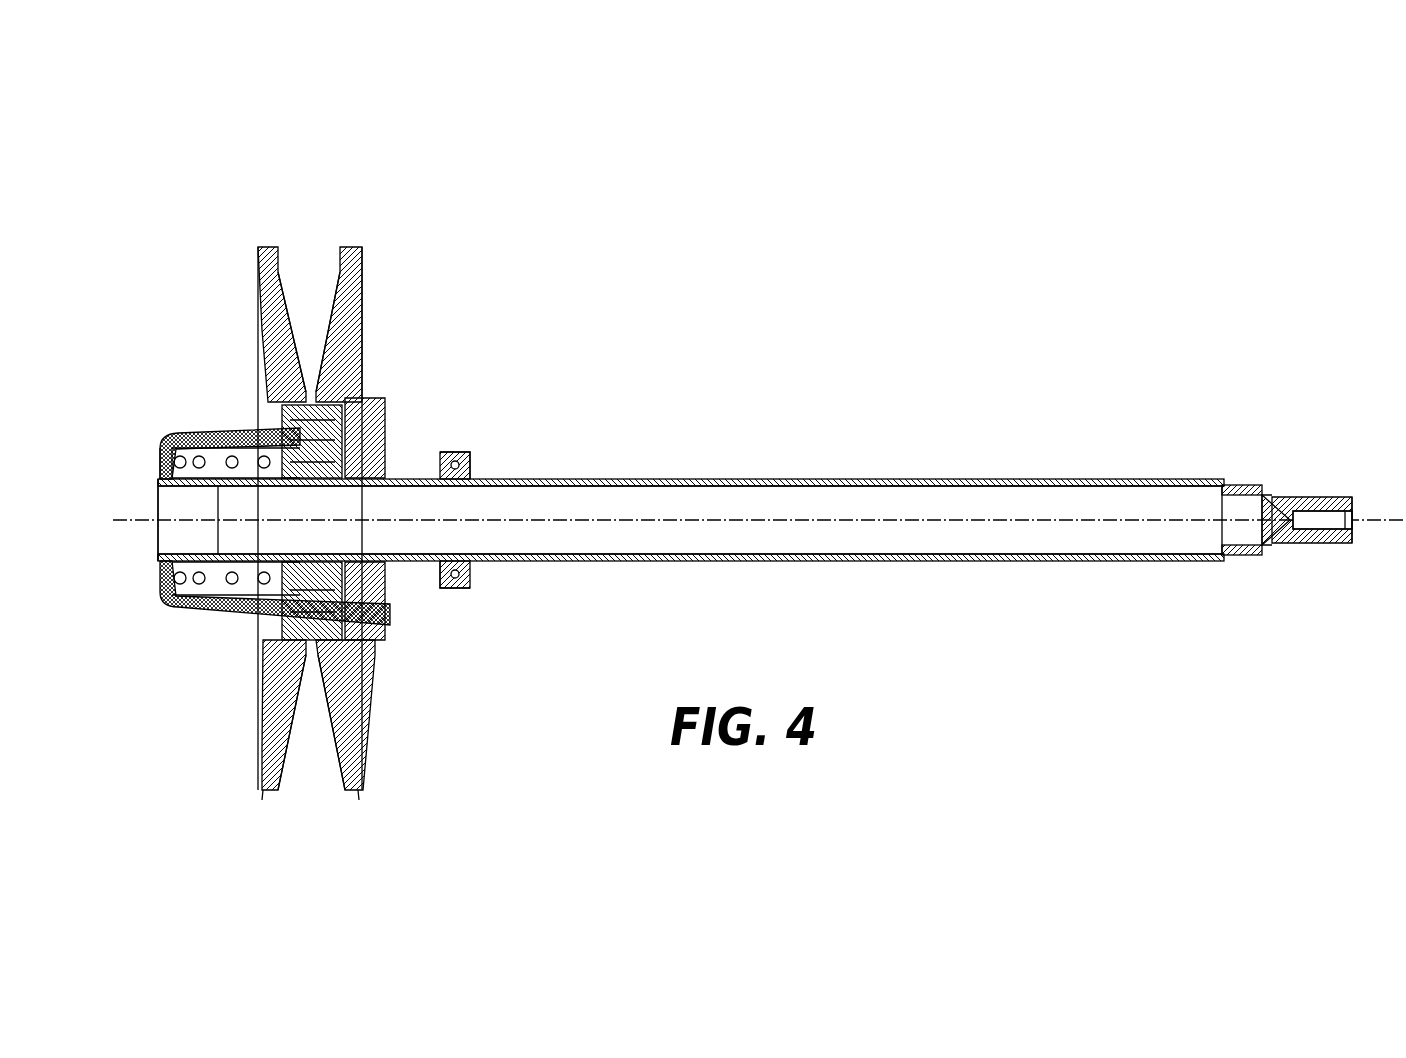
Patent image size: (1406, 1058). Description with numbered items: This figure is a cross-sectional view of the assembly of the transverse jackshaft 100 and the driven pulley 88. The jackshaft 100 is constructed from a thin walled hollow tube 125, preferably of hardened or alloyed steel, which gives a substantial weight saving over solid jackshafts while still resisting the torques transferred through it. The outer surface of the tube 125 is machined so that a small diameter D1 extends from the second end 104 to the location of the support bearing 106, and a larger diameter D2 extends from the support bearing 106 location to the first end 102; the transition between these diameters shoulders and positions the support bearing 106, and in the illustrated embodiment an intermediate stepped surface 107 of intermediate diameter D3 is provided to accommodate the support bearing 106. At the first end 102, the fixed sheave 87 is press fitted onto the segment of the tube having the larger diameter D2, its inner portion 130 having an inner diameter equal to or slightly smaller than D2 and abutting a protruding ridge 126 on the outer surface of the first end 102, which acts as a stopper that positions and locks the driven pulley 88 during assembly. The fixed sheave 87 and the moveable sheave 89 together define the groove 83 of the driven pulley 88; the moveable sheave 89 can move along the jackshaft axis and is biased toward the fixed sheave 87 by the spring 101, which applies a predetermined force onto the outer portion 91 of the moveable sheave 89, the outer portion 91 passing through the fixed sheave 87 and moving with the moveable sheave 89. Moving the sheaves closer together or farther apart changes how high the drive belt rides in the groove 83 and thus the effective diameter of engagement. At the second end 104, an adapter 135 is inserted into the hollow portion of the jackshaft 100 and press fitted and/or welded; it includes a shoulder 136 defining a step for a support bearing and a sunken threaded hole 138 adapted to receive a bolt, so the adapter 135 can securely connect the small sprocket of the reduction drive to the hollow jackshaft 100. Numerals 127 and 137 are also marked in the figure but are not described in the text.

The groove 83 is at (323, 448).
The fixed sheave 87 is at (268, 247).
The driven pulley 88 is at (312, 242).
The moveable sheave 89 is at (350, 247).
The outer portion 91 is at (170, 432).
The transverse jackshaft 100 is at (712, 383).
The spring 101 is at (200, 610).
The first end 102 is at (158, 510).
The second end 104 is at (1200, 479).
The support bearing 106 is at (455, 452).
The intermediate stepped surface 107 is at (455, 487).
The thin walled hollow tube 125 is at (650, 563).
The protruding ridge 126 is at (258, 487).
The seal 127 is at (162, 455).
The inner portion 130 is at (270, 430).
The adapter 135 is at (1335, 485).
The shoulder 136 is at (1273, 492).
The threaded end 137 is at (1292, 492).
The sunken threaded hole 138 is at (1317, 533).
The small diameter D1 is at (957, 633).
The larger diameter D2 is at (407, 632).
The intermediate diameter D3 is at (482, 476).